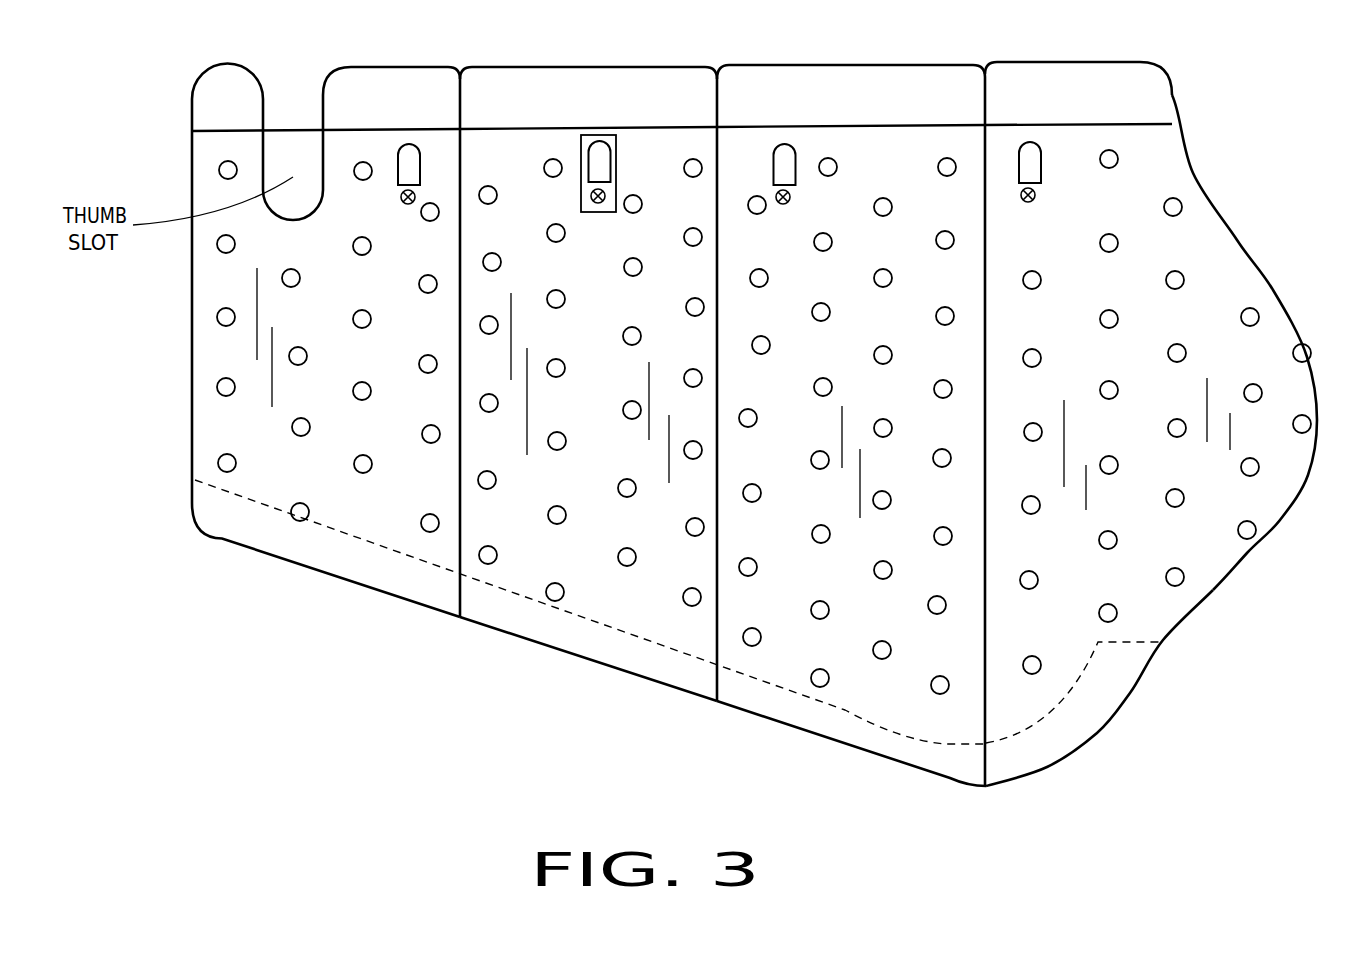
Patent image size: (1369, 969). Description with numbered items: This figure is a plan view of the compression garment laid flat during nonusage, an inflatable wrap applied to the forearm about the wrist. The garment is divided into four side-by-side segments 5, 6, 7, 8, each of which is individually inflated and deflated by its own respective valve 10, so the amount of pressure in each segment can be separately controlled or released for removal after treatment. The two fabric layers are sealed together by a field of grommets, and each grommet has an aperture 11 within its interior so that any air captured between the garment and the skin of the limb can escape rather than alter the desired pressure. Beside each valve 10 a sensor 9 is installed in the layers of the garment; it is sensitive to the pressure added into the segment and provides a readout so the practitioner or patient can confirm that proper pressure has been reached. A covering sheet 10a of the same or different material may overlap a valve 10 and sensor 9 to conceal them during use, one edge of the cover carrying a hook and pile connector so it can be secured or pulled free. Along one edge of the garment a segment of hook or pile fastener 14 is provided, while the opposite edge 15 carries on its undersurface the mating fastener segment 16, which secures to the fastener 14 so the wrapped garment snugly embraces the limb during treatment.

The garment segment 5 is at (368, 510).
The garment segment 6 is at (588, 380).
The garment segment 7 is at (883, 690).
The garment segment 8 is at (1175, 446).
The sensor 9 is at (1042, 193).
The valve 10 is at (1032, 167).
The covering sheet 10a is at (617, 157).
The aperture 11 is at (1257, 312).
The hook or pile fastener segment 14 is at (1127, 93).
The opposite edge 15 is at (1062, 765).
The hook or pile fastener segment 16 is at (1095, 692).